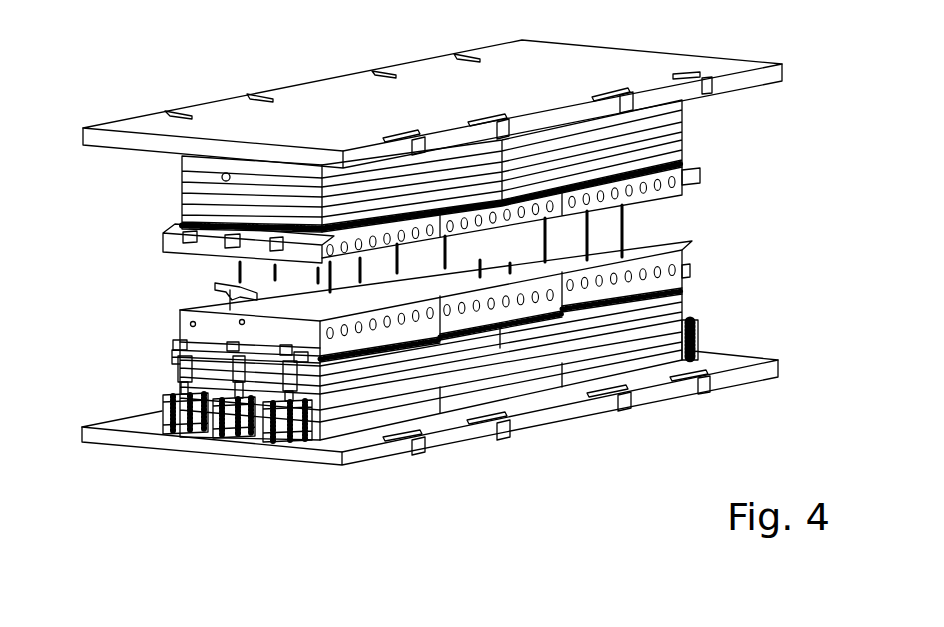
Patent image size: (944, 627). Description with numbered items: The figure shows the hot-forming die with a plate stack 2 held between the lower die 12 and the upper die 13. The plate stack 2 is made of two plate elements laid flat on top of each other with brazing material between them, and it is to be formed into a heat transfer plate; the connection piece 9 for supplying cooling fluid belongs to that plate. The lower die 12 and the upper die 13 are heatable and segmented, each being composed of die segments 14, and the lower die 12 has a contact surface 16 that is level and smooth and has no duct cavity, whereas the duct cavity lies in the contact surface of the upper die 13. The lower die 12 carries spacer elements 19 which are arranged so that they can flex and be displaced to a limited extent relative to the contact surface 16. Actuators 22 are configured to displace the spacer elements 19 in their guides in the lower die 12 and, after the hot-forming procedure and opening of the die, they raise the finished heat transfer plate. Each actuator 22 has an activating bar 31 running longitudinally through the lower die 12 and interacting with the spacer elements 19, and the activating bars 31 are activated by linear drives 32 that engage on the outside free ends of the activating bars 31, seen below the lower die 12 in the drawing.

The plate stack 2 is at (636, 228).
The connection piece 9 is at (255, 297).
The lower die 12 is at (688, 291).
The upper die 13 is at (688, 135).
The die segment 14 is at (378, 338).
The contact surface 16 is at (575, 258).
The spacer element 19 is at (626, 246).
The actuator 22 is at (176, 366).
The activating bar 31 is at (304, 352).
The linear drive 32 is at (287, 380).